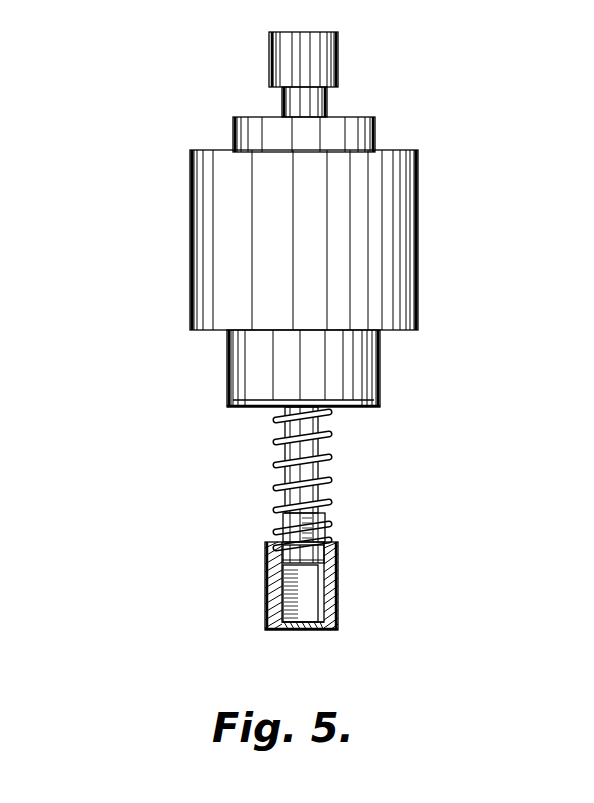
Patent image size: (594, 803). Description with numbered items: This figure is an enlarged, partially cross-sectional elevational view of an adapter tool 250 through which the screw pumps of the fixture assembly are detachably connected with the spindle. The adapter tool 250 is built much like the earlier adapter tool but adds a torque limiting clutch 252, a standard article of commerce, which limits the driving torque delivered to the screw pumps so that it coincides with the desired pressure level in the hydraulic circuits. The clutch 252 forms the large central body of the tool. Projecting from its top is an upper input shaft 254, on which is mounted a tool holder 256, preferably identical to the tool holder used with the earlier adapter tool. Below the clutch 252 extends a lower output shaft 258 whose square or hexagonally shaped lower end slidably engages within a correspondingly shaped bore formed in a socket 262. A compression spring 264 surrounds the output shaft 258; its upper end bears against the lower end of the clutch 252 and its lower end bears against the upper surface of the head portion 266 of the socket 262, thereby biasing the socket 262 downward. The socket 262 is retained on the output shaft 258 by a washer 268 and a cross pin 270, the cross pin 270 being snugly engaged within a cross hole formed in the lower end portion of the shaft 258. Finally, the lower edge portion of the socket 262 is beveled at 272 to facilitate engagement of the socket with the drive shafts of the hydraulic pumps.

The adapter tool 250 is at (467, 270).
The torque limiting clutch 252 is at (324, 250).
The upper input shaft 254 is at (328, 102).
The tool holder 256 is at (339, 68).
The lower output shaft 258 is at (332, 468).
The socket 262 is at (339, 555).
The compression spring 264 is at (332, 484).
The head portion 266 is at (268, 543).
The washer 268 is at (267, 560).
The cross pin 270 is at (267, 568).
The beveled lower edge portion 272 is at (325, 632).